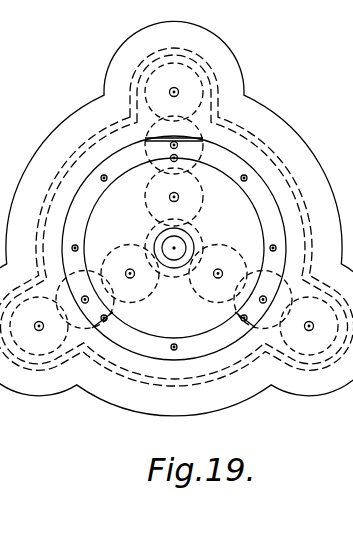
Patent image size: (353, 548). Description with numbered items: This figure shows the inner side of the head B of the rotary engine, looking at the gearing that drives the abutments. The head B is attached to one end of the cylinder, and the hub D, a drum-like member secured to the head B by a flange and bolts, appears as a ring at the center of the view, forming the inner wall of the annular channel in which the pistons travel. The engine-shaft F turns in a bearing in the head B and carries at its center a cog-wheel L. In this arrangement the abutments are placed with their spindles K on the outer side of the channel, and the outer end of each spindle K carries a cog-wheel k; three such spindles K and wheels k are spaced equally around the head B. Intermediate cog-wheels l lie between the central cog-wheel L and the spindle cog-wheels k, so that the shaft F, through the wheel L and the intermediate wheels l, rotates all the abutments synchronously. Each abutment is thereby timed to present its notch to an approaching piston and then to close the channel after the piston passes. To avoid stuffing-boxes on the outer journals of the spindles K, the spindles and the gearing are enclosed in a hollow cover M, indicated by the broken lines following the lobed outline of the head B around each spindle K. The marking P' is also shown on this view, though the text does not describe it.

The head B is at (106, 61).
The hollow cover M is at (245, 128).
The abutment-spindle K is at (169, 90).
The cog-wheel k is at (28, 297).
The hub D is at (68, 208).
The engine-shaft F is at (187, 238).
The intermediate cog-wheel l is at (127, 243).
The cog-wheel L is at (166, 276).
The plate P' is at (9, 73).